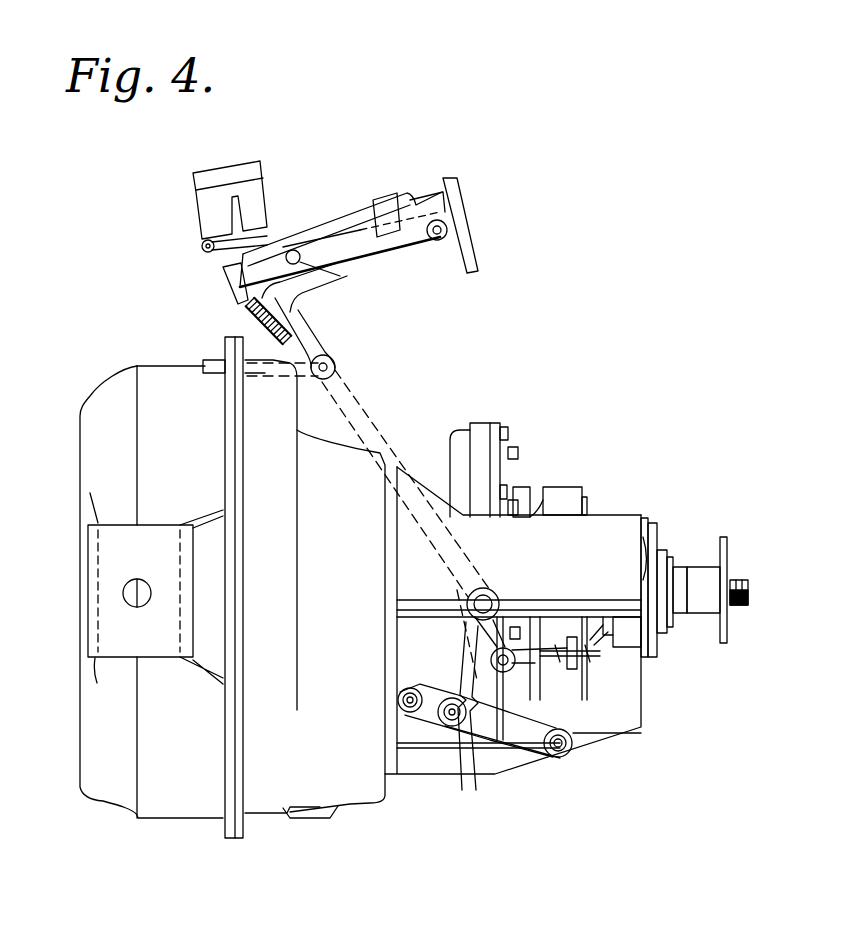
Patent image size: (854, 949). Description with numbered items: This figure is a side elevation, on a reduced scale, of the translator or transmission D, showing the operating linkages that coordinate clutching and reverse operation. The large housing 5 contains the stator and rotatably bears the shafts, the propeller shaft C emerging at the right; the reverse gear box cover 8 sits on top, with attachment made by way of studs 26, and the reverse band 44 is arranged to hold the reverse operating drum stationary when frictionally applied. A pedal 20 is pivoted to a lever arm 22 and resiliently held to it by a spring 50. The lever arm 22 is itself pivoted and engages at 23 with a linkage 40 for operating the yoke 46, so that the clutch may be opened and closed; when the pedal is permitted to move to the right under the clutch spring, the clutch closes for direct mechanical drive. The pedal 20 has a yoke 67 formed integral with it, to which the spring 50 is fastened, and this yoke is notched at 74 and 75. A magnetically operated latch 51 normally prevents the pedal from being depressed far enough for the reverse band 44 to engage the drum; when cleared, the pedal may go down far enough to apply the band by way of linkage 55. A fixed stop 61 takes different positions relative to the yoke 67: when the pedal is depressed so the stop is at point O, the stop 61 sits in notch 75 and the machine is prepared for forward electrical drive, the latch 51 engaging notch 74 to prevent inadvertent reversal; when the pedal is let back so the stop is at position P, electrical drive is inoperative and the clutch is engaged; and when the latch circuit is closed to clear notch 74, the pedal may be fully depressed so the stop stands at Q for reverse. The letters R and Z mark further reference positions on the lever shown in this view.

The housing 5 is at (232, 587).
The translator or transmission D is at (510, 412).
The studs 26 is at (512, 440).
The reverse gear box cover 8 is at (518, 488).
The reverse band 44 is at (572, 487).
The propeller shaft C is at (745, 606).
The lever arm 22 is at (310, 322).
The spring 50 is at (300, 297).
The position P is at (230, 267).
The magnetically operated latch 51 is at (222, 230).
The yoke 67 is at (347, 212).
The notch 74 is at (292, 242).
The point O is at (311, 220).
The fixed stop 61 is at (331, 278).
The notch 75 is at (350, 255).
The point R is at (385, 247).
The position Q is at (384, 209).
The clevis pivot Z is at (413, 222).
The pedal 20 is at (478, 253).
The engagement point 23 is at (495, 658).
The linkage 40 is at (540, 655).
The yoke 46 is at (605, 636).
The linkage 55 is at (483, 748).